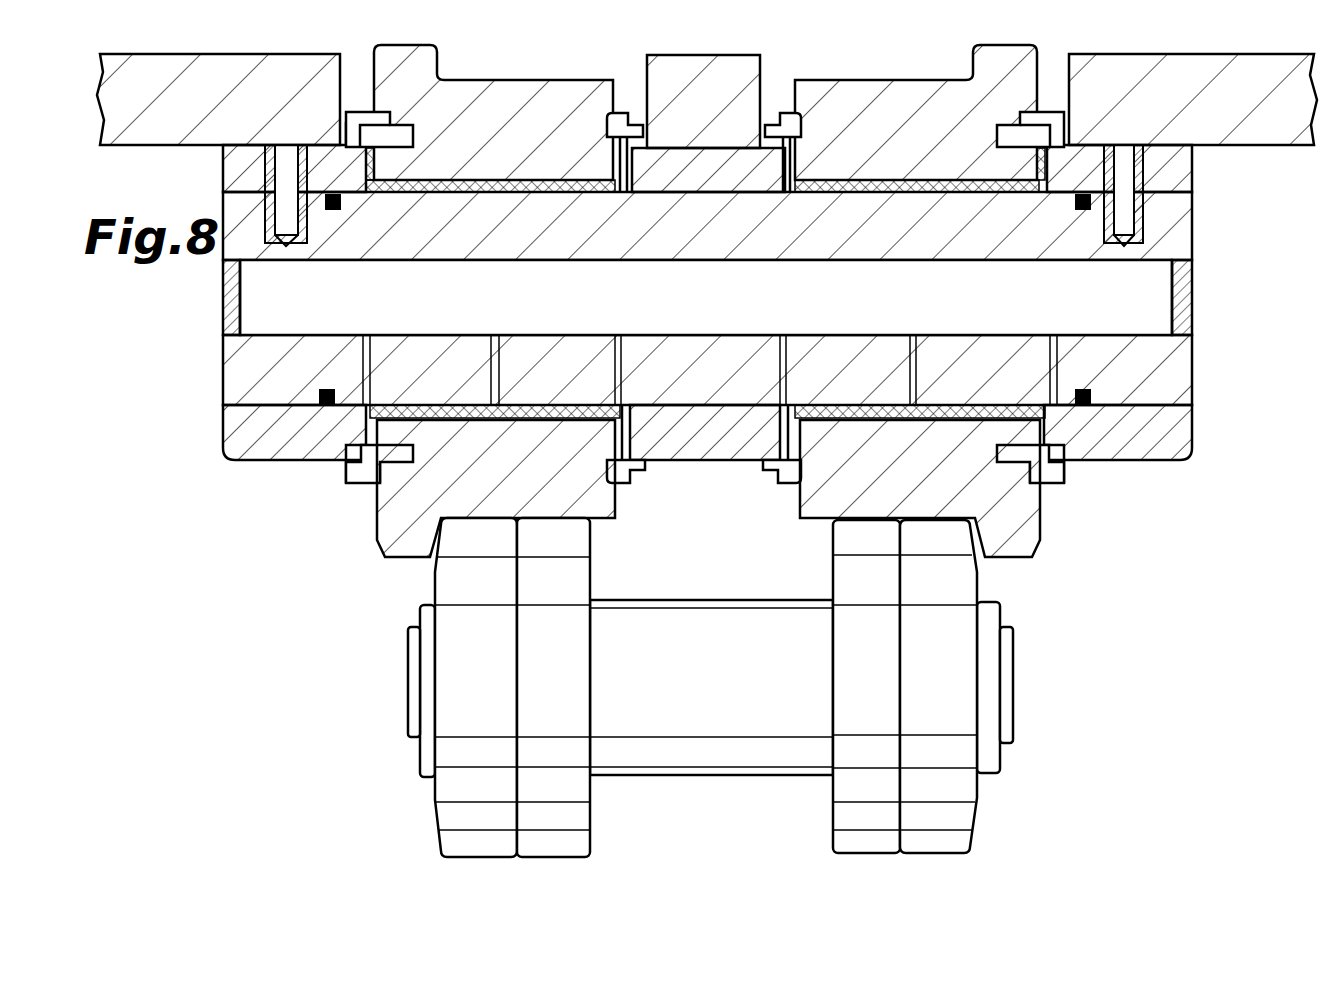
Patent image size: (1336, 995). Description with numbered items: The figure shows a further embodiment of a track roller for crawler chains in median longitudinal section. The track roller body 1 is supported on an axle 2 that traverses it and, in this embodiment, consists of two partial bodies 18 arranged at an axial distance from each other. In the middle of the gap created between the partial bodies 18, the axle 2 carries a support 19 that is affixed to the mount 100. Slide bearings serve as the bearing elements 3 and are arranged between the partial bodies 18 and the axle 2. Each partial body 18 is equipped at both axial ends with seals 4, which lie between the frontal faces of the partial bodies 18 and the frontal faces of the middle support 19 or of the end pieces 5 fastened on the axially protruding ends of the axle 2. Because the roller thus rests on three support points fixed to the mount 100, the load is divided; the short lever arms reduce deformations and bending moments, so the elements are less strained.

The track roller body 1 is at (1212, 404).
The axle 2 is at (1072, 248).
The bearings 3 is at (500, 185).
The seals 4 is at (380, 130).
The end pieces 5 is at (1160, 172).
The partial bodies 18 is at (440, 135).
The support 19 is at (685, 490).
The mount 100 is at (200, 75).